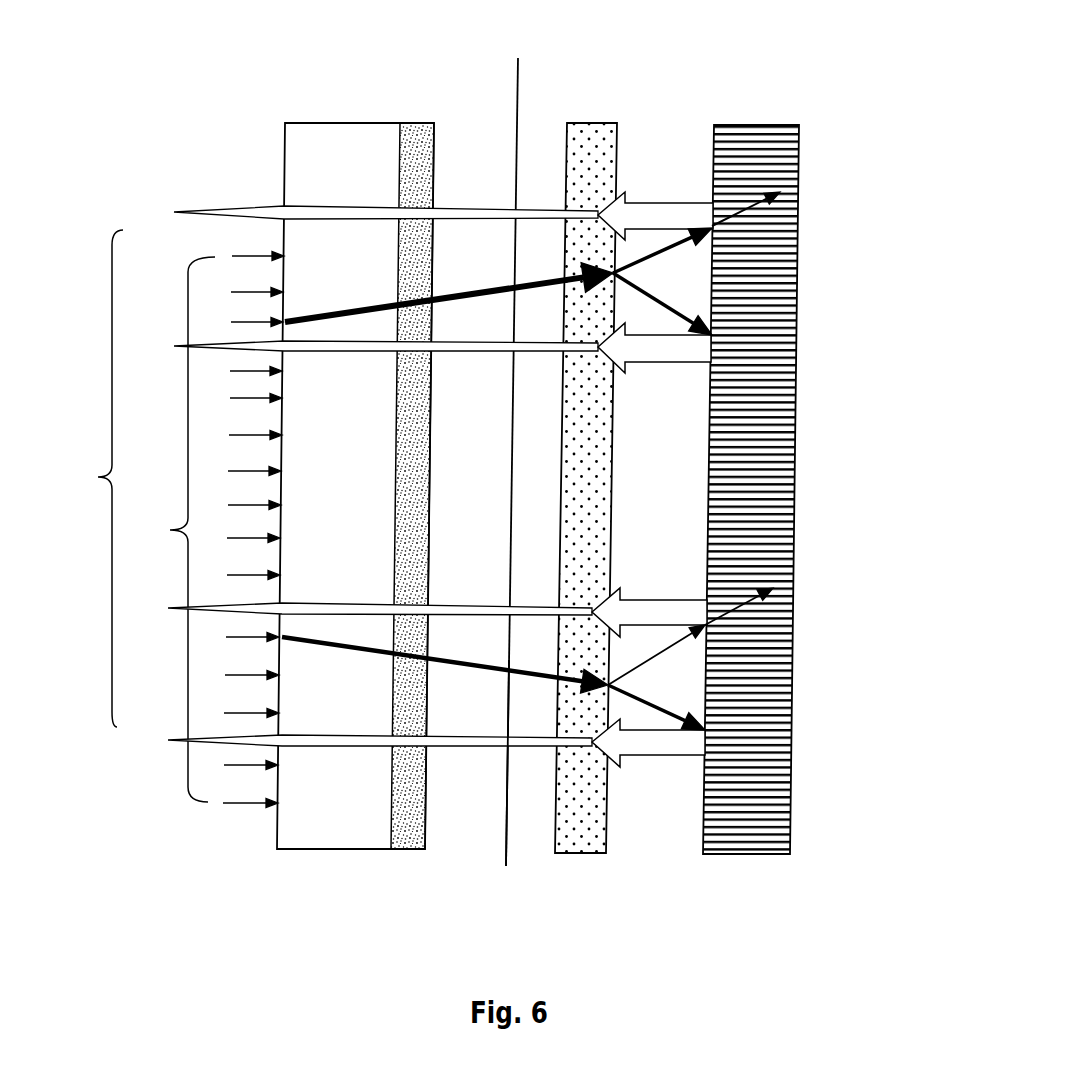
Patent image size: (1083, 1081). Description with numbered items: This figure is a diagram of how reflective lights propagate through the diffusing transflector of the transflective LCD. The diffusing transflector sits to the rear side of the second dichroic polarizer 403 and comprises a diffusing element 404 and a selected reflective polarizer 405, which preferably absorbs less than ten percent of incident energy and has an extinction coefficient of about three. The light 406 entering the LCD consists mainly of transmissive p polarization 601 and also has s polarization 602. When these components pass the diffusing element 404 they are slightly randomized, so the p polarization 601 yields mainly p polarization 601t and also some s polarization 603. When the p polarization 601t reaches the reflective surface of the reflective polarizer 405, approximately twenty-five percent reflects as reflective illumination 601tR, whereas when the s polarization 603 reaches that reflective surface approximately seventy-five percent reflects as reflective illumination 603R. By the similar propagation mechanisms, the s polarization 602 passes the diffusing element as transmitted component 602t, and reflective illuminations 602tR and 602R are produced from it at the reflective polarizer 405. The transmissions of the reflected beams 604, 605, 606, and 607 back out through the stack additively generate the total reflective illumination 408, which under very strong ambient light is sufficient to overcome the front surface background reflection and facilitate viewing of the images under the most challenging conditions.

The second dichroic polarizer 403 is at (418, 145).
The diffusing element 404 is at (584, 145).
The reflective polarizer 405 is at (749, 145).
The light entering the LCD 406 is at (170, 530).
The total reflective illumination 408 is at (231, 486).
The p polarization 601 is at (518, 443).
The s polarization 602 is at (672, 703).
The s polarization 603 is at (678, 307).
The reflected beam 604 is at (425, 216).
The reflected beam 605 is at (424, 348).
The reflected beam 606 is at (420, 612).
The reflected beam 607 is at (419, 743).
The p polarization 601t is at (678, 258).
The reflective illumination 601tR is at (680, 203).
The reflective illumination 603R is at (662, 363).
The transmitted s polarization component 602t is at (673, 647).
The reflective illumination 602tR is at (678, 597).
The reflective illumination 602R is at (675, 753).